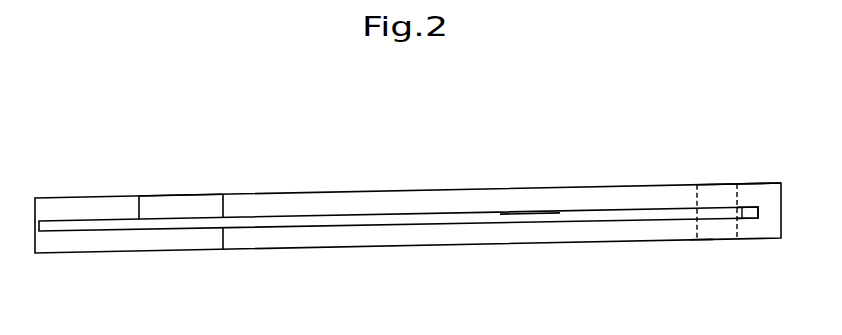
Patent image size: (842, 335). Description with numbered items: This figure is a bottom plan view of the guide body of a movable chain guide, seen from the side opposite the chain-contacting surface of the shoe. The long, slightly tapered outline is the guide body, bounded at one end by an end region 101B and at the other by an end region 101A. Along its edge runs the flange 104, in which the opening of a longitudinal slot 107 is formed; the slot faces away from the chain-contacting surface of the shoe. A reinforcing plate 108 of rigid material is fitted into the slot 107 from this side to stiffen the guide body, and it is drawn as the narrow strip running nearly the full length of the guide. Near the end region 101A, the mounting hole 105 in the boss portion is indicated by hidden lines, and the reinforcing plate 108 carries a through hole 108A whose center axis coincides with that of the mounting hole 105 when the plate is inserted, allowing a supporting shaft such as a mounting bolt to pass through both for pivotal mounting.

The flange 104 is at (397, 199).
The reinforcing plate 108 is at (483, 216).
The second end section 101B is at (181, 190).
The first end section 101A is at (713, 178).
The through hole 108A is at (745, 217).
The slot 107 is at (529, 216).
The mounting hole 105 is at (698, 227).